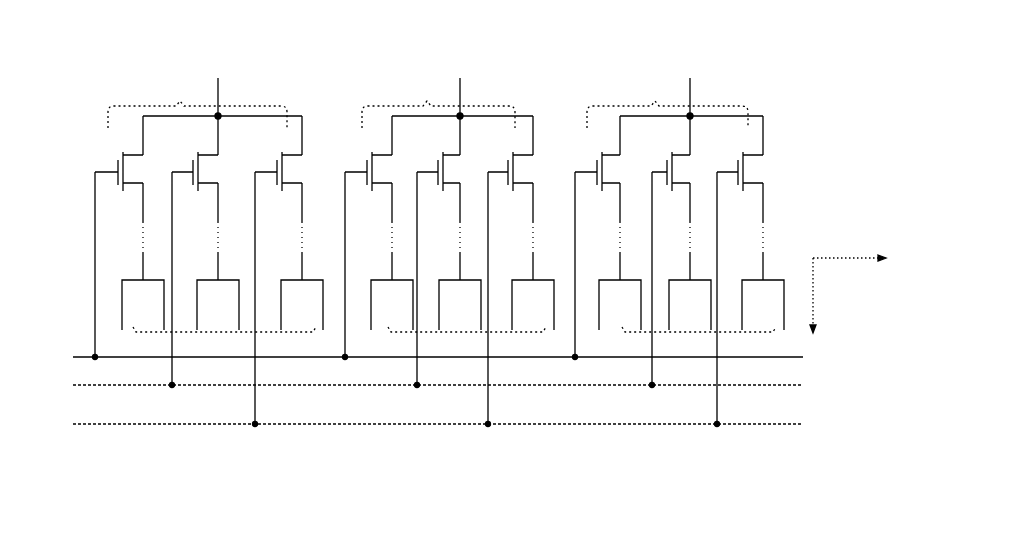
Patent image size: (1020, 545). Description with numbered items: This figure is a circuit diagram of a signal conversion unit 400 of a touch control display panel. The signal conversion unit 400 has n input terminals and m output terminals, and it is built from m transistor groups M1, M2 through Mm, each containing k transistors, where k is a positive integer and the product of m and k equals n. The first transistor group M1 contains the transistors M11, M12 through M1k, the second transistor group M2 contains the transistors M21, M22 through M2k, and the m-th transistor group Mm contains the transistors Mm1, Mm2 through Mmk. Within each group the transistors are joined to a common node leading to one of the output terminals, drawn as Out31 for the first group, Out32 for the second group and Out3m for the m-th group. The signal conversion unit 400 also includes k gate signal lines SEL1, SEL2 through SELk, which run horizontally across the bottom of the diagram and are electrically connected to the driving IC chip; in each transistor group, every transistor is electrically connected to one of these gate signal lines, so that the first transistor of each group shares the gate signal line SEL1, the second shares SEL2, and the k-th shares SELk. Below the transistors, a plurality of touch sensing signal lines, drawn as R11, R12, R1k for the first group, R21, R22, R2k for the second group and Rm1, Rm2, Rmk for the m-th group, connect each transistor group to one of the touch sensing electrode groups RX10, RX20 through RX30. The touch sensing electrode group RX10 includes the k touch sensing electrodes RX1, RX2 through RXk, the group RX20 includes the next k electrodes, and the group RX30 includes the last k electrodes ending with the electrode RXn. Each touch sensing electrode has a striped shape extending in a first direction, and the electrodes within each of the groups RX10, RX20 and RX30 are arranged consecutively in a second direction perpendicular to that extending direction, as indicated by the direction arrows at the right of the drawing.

The signal conversion unit 400 is at (794, 30).
The first output line Out31 is at (218, 91).
The second output line Out32 is at (460, 91).
The m-th output line Out3m is at (690, 91).
The first transistor group M1 is at (205, 105).
The second transistor group M2 is at (447, 105).
The m-th transistor group Mm is at (675, 105).
The transistor M11 is at (118, 238).
The transistor M12 is at (194, 252).
The transistor M1k is at (278, 271).
The transistor M21 is at (368, 238).
The transistor M22 is at (438, 252).
The transistor M2k is at (510, 271).
The transistor Mm1 is at (597, 238).
The transistor Mm2 is at (670, 252).
The transistor Mmk is at (739, 271).
The connection line R11 is at (131, 231).
The connection line R12 is at (206, 231).
The connection line R1k is at (291, 231).
The connection line R21 is at (380, 231).
The connection line R22 is at (448, 231).
The connection line R2k is at (522, 231).
The connection line Rm1 is at (607, 231).
The connection line Rm2 is at (677, 231).
The connection line Rmk is at (750, 231).
The touch sensing electrode RX1 is at (143, 305).
The touch sensing electrode RX2 is at (218, 305).
The touch sensing electrode RXk is at (302, 305).
The touch sensing electrode RXn is at (763, 305).
The touch sensing electrode group RX10 is at (216, 333).
The touch sensing electrode group RX20 is at (461, 333).
The touch sensing electrode group RX30 is at (691, 333).
The gate signal line SEL1 is at (417, 357).
The gate signal line SEL2 is at (417, 385).
The gate signal line SELk is at (417, 424).